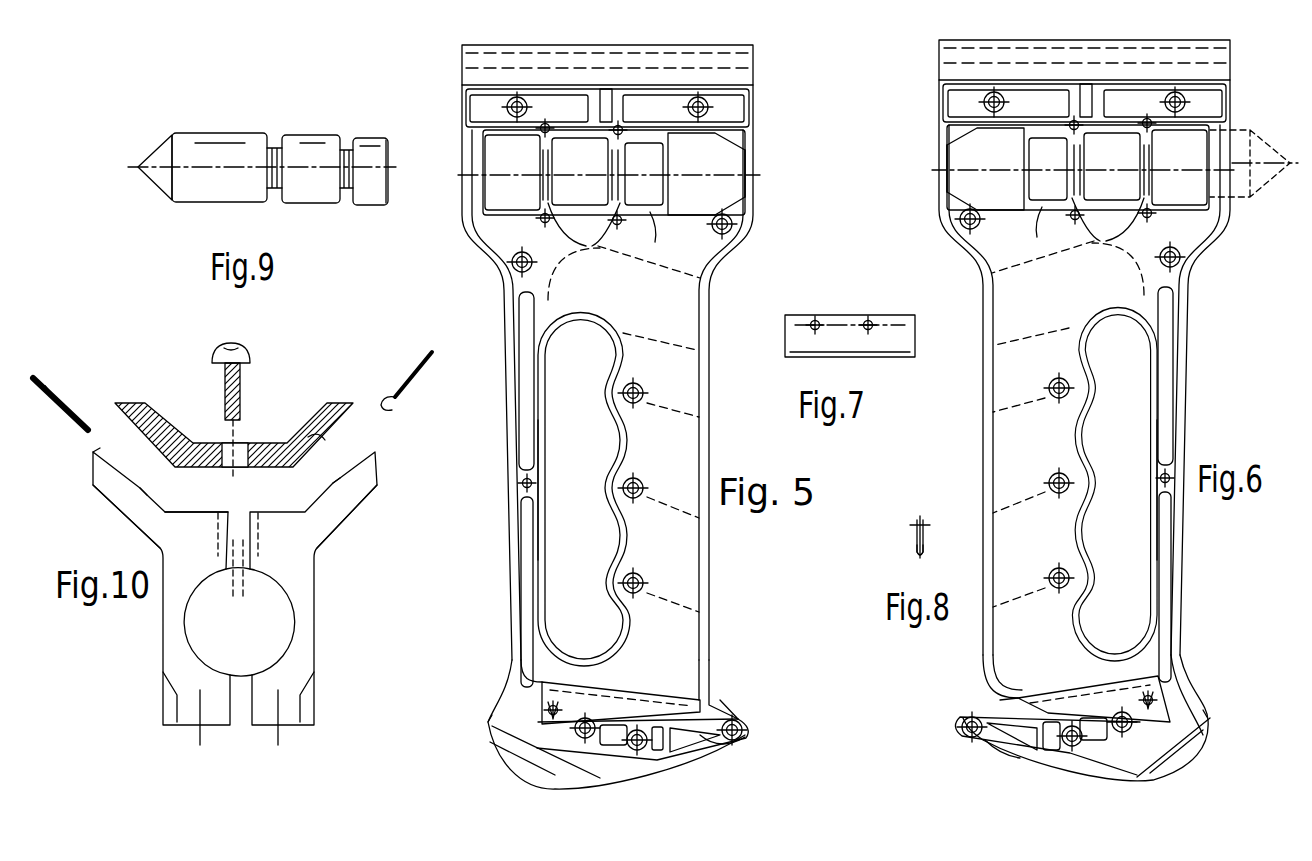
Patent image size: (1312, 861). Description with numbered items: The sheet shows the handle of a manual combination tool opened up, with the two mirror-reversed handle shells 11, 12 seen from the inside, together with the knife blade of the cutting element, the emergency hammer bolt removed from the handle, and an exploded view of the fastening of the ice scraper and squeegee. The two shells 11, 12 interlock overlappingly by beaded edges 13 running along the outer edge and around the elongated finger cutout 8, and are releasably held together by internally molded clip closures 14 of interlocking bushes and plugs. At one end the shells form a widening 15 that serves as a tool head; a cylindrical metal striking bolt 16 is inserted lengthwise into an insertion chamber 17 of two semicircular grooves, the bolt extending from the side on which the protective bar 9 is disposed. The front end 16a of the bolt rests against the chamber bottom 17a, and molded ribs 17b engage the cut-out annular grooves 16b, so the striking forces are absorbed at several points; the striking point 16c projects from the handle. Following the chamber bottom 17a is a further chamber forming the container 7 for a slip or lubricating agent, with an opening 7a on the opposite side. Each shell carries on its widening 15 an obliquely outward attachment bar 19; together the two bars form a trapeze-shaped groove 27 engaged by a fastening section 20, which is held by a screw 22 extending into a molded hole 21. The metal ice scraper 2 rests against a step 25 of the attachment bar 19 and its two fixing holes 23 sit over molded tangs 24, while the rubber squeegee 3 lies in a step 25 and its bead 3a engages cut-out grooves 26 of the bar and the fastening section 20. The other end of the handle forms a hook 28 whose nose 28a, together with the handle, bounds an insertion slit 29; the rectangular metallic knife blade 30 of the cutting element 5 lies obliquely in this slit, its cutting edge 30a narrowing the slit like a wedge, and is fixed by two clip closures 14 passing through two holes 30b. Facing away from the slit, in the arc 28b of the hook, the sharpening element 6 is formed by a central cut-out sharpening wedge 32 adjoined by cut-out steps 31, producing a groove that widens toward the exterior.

In FIG. 10, the ice scraper 2 is at (45, 385).
In FIG. 10, the squeegee 3 is at (403, 372).
In FIG. 10, the bead 3a is at (398, 407).
In FIG. 5, the cutting element 5 is at (730, 713).
In FIG. 6, the cutting element 5 is at (996, 701).
In FIG. 5, the sharpening element 6 is at (488, 732).
In FIG. 6, the sharpening element 6 is at (1188, 718).
In FIG. 5, the container 7 is at (718, 165).
In FIG. 6, the container 7 is at (985, 180).
In FIG. 5, the opening 7a is at (760, 172).
In FIG. 6, the opening 7a is at (945, 165).
In FIG. 5, the finger cutout 8 is at (575, 548).
In FIG. 6, the finger cutout 8 is at (1130, 425).
In FIG. 5, the protective bar 9 is at (527, 525).
In FIG. 6, the protective bar 9 is at (1170, 380).
In FIG. 5, the handle shell 11 is at (709, 590).
In FIG. 10, the handle shell 11 is at (200, 735).
In FIG. 6, the handle shell 12 is at (985, 442).
In FIG. 10, the handle shell 12 is at (278, 735).
In FIG. 5, the beaded edges 13 is at (625, 350).
In FIG. 6, the beaded edges 13 is at (1185, 335).
In FIG. 5, the clip closures 14 is at (517, 96).
In FIG. 6, the clip closures 14 is at (1186, 100).
In FIG. 5, the widening 15 is at (470, 118).
In FIG. 6, the widening 15 is at (942, 82).
In FIG. 10, the widening 15 is at (310, 608).
In FIG. 6, the striking bolt 16 is at (1250, 128).
In FIG. 9, the striking bolt 16 is at (225, 157).
In FIG. 9, the front end 16a is at (391, 191).
In FIG. 9, the annular grooves 16b is at (345, 196).
In FIG. 9, the striking point 16c is at (162, 158).
In FIG. 5, the insertion chamber 17 is at (572, 163).
In FIG. 6, the insertion chamber 17 is at (1102, 148).
In FIG. 10, the insertion chamber 17 is at (235, 648).
In FIG. 5, the chamber bottom 17a is at (660, 238).
In FIG. 6, the chamber bottom 17a is at (1040, 228).
In FIG. 5, the ribs 17b is at (592, 248).
In FIG. 6, the ribs 17b is at (1100, 245).
In FIG. 5, the attachment bar 19 is at (483, 78).
In FIG. 6, the attachment bar 19 is at (950, 53).
In FIG. 10, the attachment bar 19 is at (110, 487).
In FIG. 10, the fastening section 20 is at (274, 450).
In FIG. 5, the molded hole 21 is at (612, 88).
In FIG. 6, the molded hole 21 is at (1087, 86).
In FIG. 10, the molded hole 21 is at (238, 569).
In FIG. 10, the screw 22 is at (222, 380).
In FIG. 10, the fixing holes 23 is at (70, 411).
In FIG. 10, the tangs 24 is at (110, 448).
In FIG. 10, the step 25 is at (138, 488).
In FIG. 10, the grooves 26 is at (326, 441).
In FIG. 10, the trapeze-shaped groove 27 is at (203, 496).
In FIG. 5, the hook 28 is at (651, 775).
In FIG. 6, the hook 28 is at (1104, 762).
In FIG. 5, the nose 28a is at (713, 755).
In FIG. 6, the nose 28a is at (1020, 762).
In FIG. 5, the arc 28b is at (528, 790).
In FIG. 6, the arc 28b is at (1200, 770).
In FIG. 5, the insertion slit 29 is at (695, 712).
In FIG. 6, the insertion slit 29 is at (1003, 736).
In FIG. 5, the knife blade 30 is at (636, 712).
In FIG. 6, the knife blade 30 is at (1085, 710).
In FIG. 7, the knife blade 30 is at (800, 341).
In FIG. 8, the knife blade 30 is at (916, 536).
In FIG. 7, the cutting edge 30a is at (900, 356).
In FIG. 8, the cutting edge 30a is at (918, 550).
In FIG. 7, the holes 30b is at (865, 318).
In FIG. 5, the steps 31 is at (520, 763).
In FIG. 6, the steps 31 is at (1212, 737).
In FIG. 5, the sharpening wedge 32 is at (510, 740).
In FIG. 6, the sharpening wedge 32 is at (1202, 722).